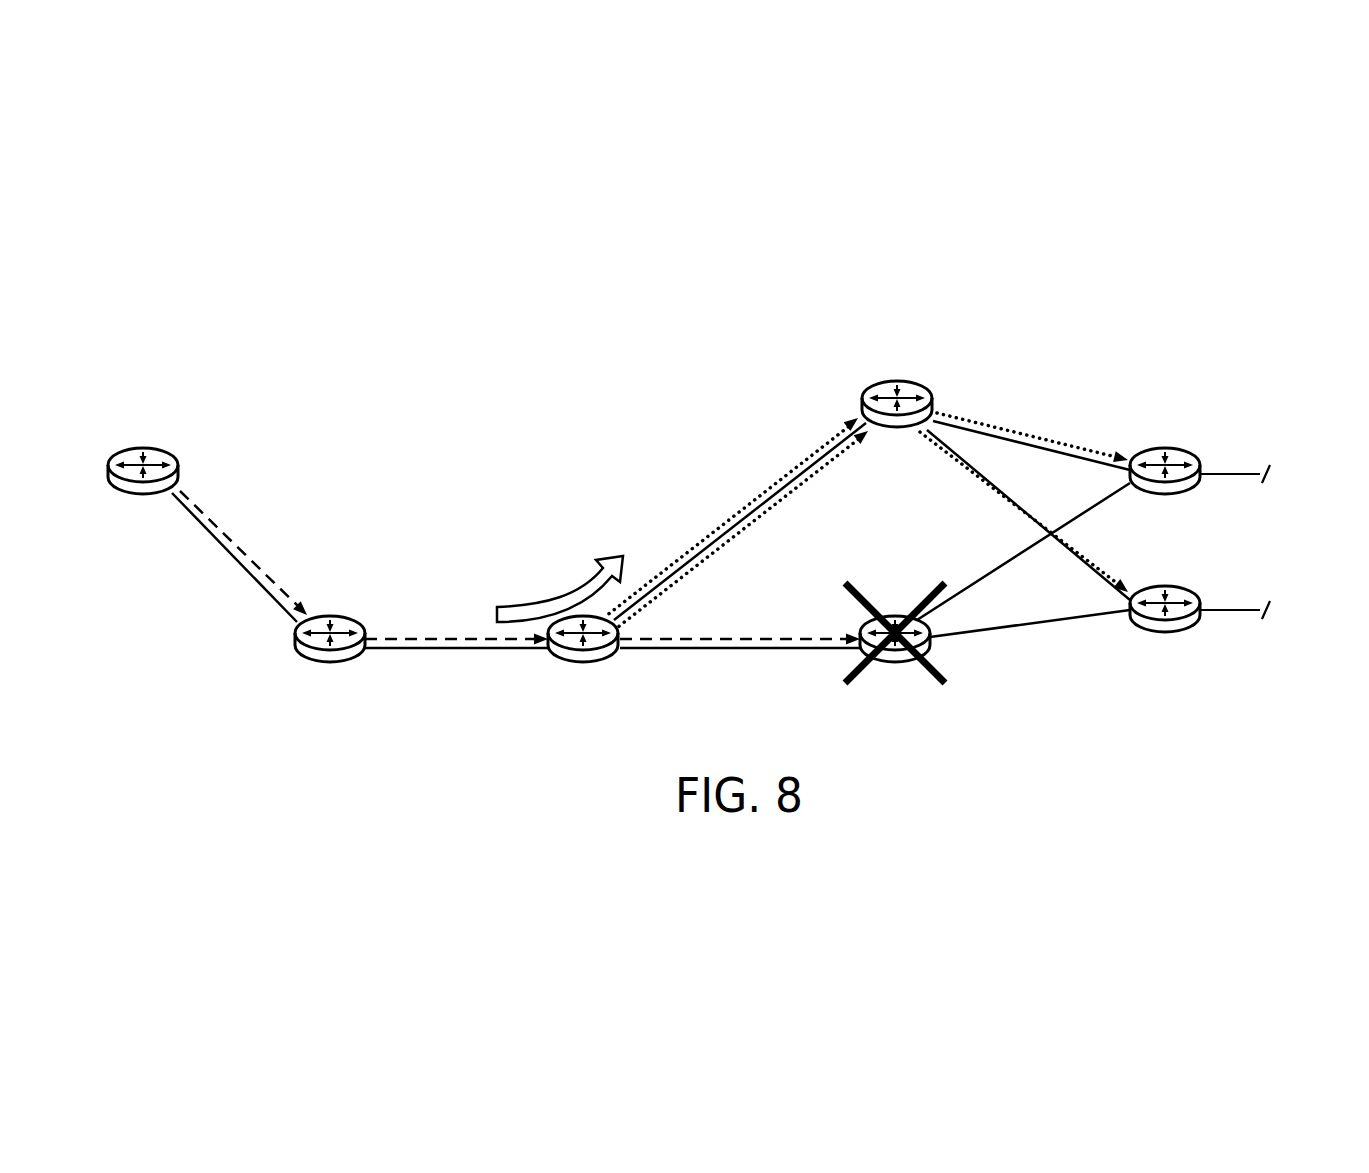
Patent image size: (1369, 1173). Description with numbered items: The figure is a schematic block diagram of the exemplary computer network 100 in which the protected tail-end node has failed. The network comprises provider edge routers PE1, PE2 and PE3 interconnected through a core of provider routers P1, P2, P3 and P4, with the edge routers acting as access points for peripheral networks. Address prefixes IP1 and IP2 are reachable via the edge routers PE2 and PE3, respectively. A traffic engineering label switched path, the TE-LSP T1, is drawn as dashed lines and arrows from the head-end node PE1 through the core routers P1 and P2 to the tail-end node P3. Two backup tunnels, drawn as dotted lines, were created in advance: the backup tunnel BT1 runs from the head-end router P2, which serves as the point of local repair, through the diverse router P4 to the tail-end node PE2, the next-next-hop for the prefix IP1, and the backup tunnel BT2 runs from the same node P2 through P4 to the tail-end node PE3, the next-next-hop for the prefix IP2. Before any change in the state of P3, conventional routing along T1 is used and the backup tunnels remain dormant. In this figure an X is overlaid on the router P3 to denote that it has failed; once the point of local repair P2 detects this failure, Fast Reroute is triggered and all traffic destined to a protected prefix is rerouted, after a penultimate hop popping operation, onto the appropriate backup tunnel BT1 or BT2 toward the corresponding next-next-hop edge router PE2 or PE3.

The computer network 100 is at (390, 355).
The provider edge router PE1 is at (129, 499).
The provider edge router PE2 is at (1166, 444).
The provider edge router PE3 is at (1166, 638).
The provider router P1 is at (330, 669).
The provider router P2 is at (583, 669).
The provider router P3 is at (895, 652).
The provider router P4 is at (897, 377).
The TE-LSP T1 is at (262, 552).
The backup tunnel BT1 is at (721, 503).
The backup tunnel BT2 is at (760, 534).
The address prefix IP1 is at (1261, 474).
The address prefix IP2 is at (1261, 610).